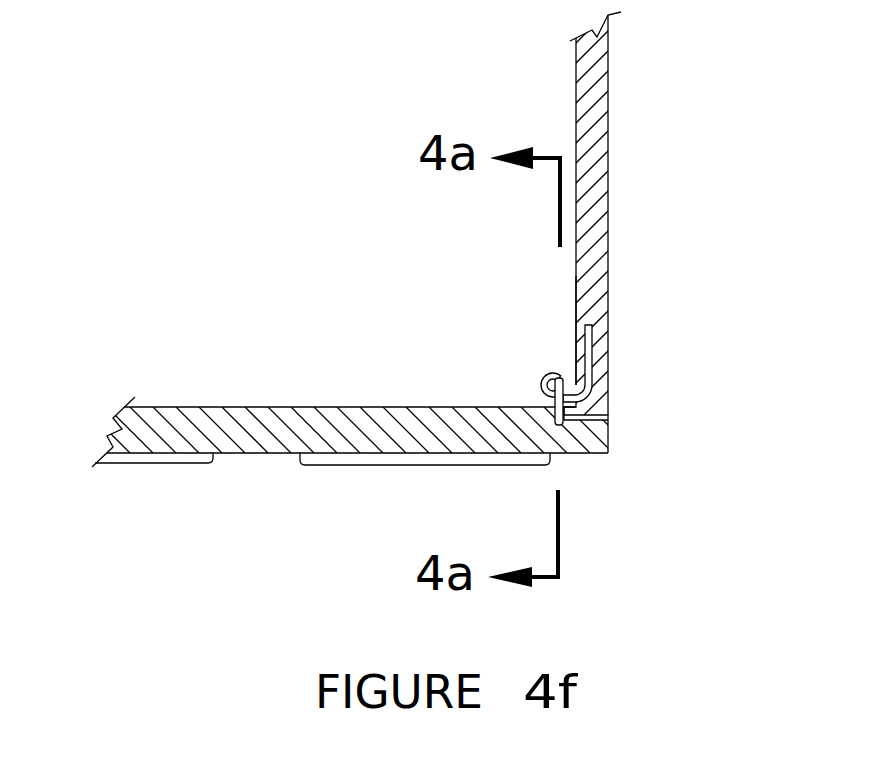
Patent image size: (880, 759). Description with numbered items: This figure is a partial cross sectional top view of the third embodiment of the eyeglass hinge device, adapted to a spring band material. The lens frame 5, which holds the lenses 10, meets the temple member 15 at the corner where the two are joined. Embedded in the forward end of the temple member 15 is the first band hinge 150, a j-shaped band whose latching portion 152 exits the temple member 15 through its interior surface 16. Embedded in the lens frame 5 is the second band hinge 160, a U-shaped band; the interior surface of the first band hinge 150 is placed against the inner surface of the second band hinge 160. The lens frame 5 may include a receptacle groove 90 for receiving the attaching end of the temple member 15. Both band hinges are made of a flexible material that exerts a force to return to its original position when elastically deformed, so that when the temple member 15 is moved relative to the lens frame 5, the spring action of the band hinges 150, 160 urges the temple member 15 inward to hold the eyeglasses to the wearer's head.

The lens frame 5 is at (260, 407).
The lenses 10 is at (150, 465).
The temple member 15 is at (609, 100).
The interior surface 16 is at (575, 303).
The receptacle groove 90 is at (572, 421).
The first band hinge 150 is at (600, 371).
The latching portion 152 is at (541, 382).
The second band hinge 160 is at (556, 424).